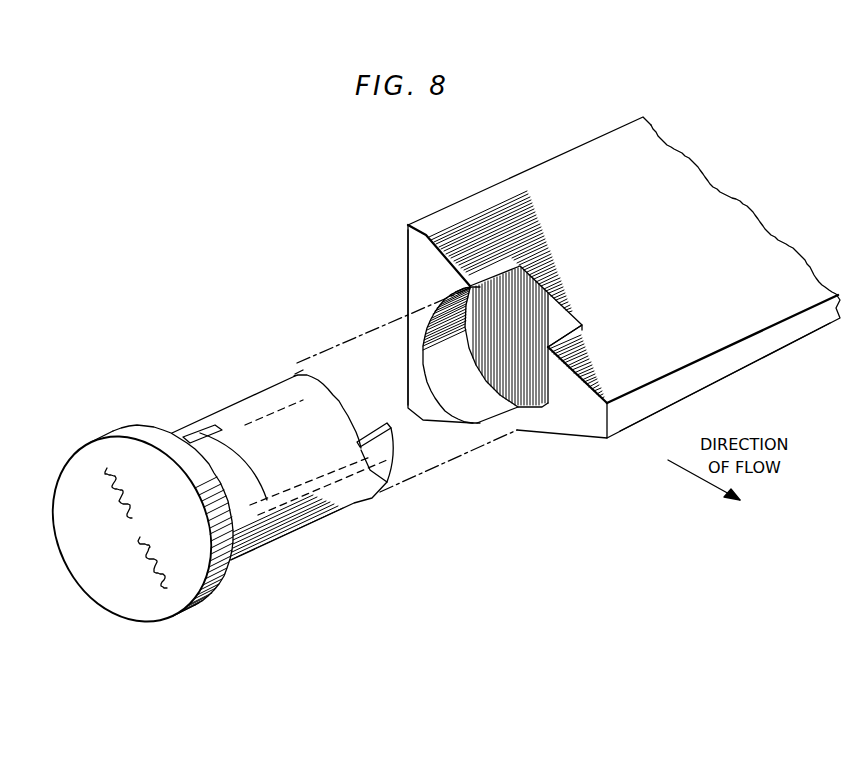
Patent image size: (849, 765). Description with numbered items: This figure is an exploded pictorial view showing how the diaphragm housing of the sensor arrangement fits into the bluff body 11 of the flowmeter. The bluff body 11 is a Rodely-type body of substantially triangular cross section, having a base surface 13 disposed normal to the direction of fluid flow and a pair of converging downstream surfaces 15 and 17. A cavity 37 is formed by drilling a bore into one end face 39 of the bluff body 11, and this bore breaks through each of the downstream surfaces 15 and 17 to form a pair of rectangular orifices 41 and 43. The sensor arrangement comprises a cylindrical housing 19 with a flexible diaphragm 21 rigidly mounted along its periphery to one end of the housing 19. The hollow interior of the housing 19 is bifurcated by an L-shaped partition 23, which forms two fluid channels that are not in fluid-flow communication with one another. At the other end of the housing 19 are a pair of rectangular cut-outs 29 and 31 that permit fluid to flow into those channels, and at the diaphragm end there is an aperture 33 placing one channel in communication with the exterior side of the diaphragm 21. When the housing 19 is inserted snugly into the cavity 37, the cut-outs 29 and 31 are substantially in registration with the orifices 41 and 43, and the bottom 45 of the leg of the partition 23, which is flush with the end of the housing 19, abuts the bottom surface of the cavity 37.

The bluff body 11 is at (802, 346).
The base surface 13 is at (407, 242).
The downstream surface 15 is at (713, 372).
The downstream surface 17 is at (608, 172).
The cylindrical housing 19 is at (236, 575).
The flexible diaphragm 21 is at (142, 573).
The L-shaped partition 23 is at (240, 488).
The rectangular cut-out 29 is at (340, 387).
The rectangular cut-out 31 is at (372, 493).
The aperture 33 is at (200, 447).
The cavity 37 is at (533, 372).
The end face 39 is at (437, 408).
The rectangular orifice 41 is at (528, 305).
The rectangular orifice 43 is at (507, 412).
The bottom of the leg of the partition 45 is at (323, 420).